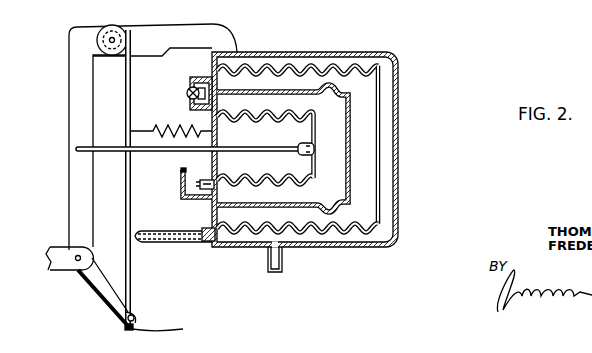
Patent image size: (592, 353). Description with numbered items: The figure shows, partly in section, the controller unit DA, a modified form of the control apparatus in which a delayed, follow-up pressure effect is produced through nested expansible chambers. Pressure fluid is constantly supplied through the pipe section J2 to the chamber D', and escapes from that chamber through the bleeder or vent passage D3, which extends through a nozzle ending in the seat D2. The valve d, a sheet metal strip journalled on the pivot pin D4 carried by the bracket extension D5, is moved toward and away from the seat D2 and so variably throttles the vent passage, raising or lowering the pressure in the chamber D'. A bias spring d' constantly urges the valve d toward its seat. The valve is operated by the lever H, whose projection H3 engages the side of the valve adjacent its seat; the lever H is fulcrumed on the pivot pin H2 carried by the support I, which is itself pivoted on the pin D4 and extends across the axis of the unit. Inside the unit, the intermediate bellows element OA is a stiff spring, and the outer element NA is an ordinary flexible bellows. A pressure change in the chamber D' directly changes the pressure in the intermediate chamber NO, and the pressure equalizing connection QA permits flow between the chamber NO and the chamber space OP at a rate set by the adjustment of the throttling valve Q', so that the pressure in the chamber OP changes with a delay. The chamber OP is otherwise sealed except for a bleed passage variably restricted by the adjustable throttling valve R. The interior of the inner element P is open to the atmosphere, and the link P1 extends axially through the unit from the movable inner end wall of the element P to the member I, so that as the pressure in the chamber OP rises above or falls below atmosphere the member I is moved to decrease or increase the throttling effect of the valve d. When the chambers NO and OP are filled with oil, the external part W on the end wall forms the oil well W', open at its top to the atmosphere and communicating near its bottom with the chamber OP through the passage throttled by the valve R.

The support I is at (78, 125).
The pivot pin D4 is at (115, 37).
The bracket extension D5 is at (216, 33).
The chamber D' is at (323, 149).
The controller unit DA is at (405, 50).
The outer bellows element NA is at (377, 195).
The intermediate chamber NO is at (375, 228).
The intermediate bellows element OA is at (351, 183).
The chamber space OP is at (336, 163).
The link P1 is at (112, 151).
The inner element P is at (317, 141).
The pressure equalizing connection QA is at (203, 77).
The throttling valve Q' is at (179, 84).
The bias spring d' is at (171, 118).
The external part W is at (181, 185).
The oil well W' is at (170, 165).
The adjustable throttling valve R is at (212, 180).
The seat D2 is at (143, 243).
The bleeder or vent passage D3 is at (195, 241).
The pipe section J2 is at (281, 265).
The pivot pin H2 is at (78, 272).
The lever H is at (104, 298).
The projection H3 is at (135, 318).
The valve d is at (161, 329).